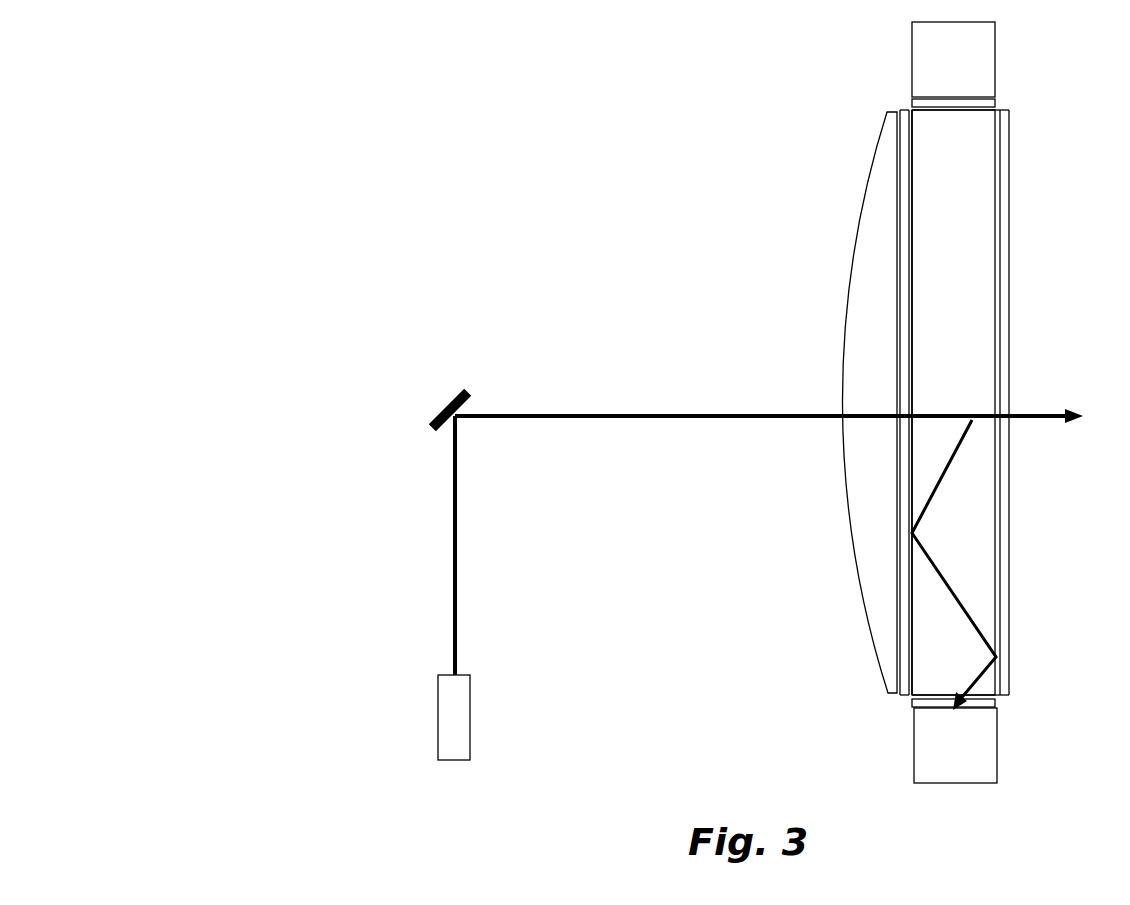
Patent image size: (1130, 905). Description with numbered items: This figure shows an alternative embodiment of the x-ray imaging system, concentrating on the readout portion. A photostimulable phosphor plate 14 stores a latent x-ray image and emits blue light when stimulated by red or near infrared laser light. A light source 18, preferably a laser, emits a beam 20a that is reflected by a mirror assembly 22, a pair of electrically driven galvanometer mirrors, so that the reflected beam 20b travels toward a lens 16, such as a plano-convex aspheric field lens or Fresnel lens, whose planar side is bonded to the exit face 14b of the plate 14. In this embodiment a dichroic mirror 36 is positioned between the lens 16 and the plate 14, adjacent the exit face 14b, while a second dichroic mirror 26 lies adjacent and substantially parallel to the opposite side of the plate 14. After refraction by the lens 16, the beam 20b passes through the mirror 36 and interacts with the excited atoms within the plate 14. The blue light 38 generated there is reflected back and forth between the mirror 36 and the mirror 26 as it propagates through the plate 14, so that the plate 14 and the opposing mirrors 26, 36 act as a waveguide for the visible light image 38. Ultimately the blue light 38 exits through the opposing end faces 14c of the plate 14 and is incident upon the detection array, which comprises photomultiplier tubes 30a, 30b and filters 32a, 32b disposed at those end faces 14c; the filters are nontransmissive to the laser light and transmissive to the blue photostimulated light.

The photostimulable phosphor plate 14 is at (953, 402).
The exit face 14b is at (913, 205).
The end faces 14c is at (925, 110).
The lens 16 is at (868, 522).
The light source 18 is at (468, 712).
The beam 20a is at (458, 563).
The reflected beam 20b is at (573, 415).
The mirror assembly 22 is at (450, 402).
The dichroic mirror 26 is at (1007, 224).
The photomultiplier tube 30a is at (993, 45).
The photomultiplier tube 30b is at (997, 757).
The filter 32a is at (995, 103).
The filter 32b is at (913, 702).
The dichroic mirror 36 is at (903, 162).
The blue light 38 is at (965, 603).